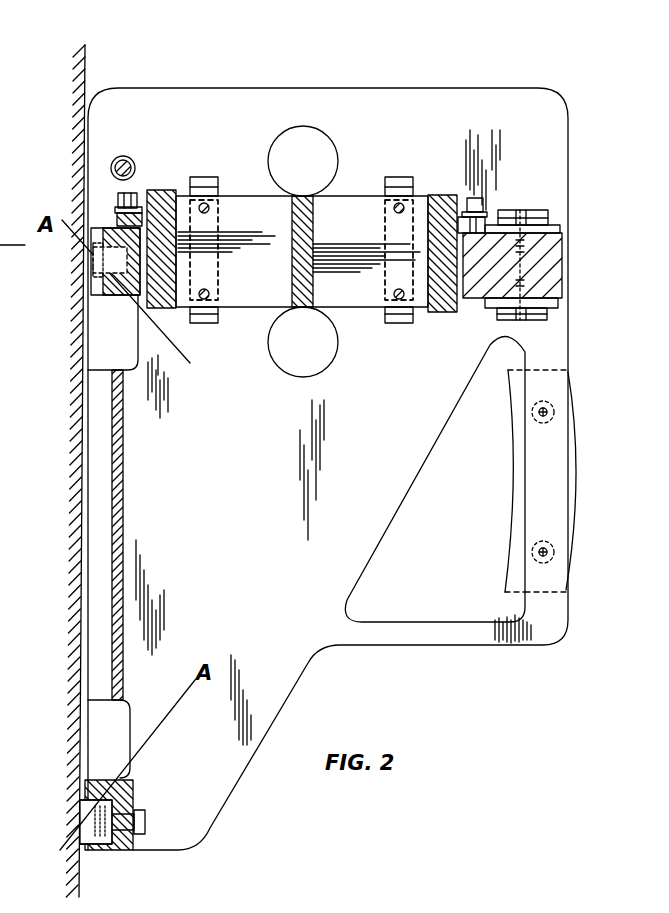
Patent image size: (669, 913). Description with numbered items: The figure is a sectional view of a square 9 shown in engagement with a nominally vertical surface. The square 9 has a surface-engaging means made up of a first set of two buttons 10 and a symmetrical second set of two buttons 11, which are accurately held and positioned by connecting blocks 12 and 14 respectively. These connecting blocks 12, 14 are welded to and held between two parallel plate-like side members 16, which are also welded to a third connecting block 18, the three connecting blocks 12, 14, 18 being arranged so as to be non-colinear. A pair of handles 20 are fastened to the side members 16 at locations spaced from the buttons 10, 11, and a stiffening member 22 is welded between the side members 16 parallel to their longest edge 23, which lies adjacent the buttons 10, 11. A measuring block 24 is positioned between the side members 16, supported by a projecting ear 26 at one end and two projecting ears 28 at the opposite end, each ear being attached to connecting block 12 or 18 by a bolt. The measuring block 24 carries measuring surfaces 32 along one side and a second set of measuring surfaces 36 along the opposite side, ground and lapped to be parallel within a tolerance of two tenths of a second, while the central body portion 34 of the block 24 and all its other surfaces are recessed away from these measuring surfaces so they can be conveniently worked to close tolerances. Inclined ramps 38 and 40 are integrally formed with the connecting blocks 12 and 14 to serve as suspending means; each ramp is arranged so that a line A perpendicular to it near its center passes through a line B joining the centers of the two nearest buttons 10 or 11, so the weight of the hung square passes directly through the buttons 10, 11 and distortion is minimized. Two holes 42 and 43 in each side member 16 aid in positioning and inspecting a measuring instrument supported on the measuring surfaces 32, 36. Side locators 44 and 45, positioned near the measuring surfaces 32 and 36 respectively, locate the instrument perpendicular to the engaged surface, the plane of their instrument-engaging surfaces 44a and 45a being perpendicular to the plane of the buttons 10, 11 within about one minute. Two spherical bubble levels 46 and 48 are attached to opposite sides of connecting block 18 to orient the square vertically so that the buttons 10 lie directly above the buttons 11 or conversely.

The square 9 is at (401, 75).
The buttons 10 is at (93, 259).
The buttons 11 is at (80, 812).
The connecting block 12 is at (103, 283).
The connecting block 14 is at (122, 843).
The side members 16 is at (251, 96).
The connecting block 18 is at (555, 263).
The handles 20 is at (570, 565).
The stiffening member 22 is at (125, 490).
The longest edge 23 is at (86, 636).
The measuring block 24 is at (345, 196).
The projecting ear 26 is at (143, 210).
The projecting ears 28 is at (486, 226).
The measuring surfaces 32 is at (167, 193).
The roller drum 34 is at (272, 272).
The measuring surfaces 36 is at (167, 311).
The inclined ramp 38 is at (105, 308).
The inclined ramp 40 is at (100, 780).
The hole 42 is at (320, 128).
The hole 43 is at (322, 376).
The side locator 44 is at (222, 192).
The instrument-engaging surface 44a is at (214, 177).
The side locator 45 is at (410, 196).
The instrument-engaging surface 45a is at (403, 358).
The spherical bubble level 46 is at (548, 219).
The spherical bubble level 48 is at (548, 313).